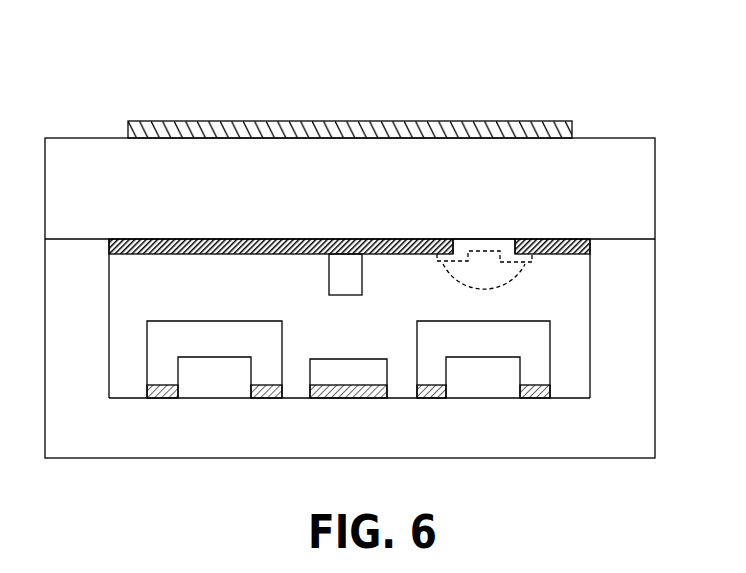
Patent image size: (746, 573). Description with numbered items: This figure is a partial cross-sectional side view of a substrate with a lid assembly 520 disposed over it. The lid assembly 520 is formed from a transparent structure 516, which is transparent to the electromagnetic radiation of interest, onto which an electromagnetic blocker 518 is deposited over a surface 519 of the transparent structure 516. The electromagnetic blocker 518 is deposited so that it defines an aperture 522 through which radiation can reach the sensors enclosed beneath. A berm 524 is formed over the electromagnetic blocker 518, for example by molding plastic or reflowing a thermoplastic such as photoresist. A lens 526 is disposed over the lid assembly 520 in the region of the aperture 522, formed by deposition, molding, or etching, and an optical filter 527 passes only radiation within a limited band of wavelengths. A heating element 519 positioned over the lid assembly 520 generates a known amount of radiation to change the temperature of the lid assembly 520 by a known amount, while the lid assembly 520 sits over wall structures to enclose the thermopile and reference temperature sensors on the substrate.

The transparent structure 516 is at (617, 148).
The electromagnetic blocker 518 is at (206, 239).
The heating element 519 is at (249, 239).
The lid assembly 520 is at (503, 42).
The aperture 522 is at (478, 252).
The berm 524 is at (328, 283).
The lens 526 is at (507, 278).
The optical filter 527 is at (533, 262).